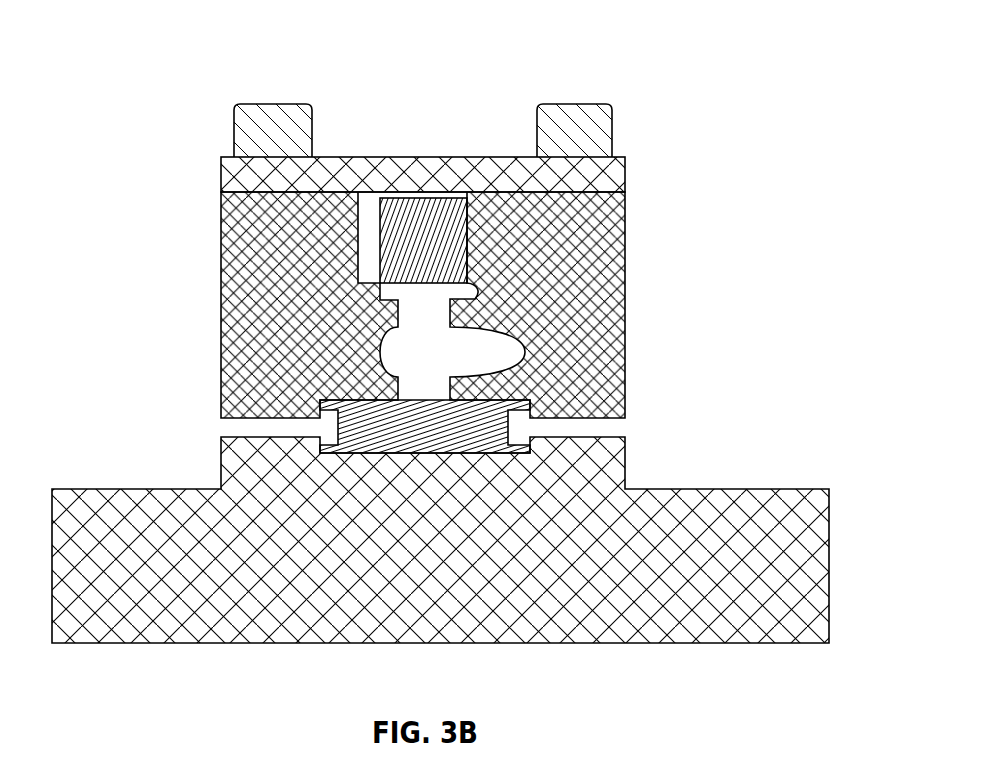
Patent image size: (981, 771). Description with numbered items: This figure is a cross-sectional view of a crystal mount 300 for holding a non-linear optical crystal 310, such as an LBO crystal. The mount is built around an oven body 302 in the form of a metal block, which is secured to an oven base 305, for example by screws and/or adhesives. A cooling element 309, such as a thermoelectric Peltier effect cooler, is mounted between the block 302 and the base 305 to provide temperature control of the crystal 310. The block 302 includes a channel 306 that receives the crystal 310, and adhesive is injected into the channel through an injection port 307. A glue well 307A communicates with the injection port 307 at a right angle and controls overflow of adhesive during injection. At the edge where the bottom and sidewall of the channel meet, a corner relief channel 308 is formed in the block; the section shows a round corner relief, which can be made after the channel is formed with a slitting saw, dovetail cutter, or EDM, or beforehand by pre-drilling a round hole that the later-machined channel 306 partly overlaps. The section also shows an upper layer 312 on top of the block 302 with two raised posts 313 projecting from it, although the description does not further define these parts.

The crystal mount 300 is at (182, 61).
The oven body 302 is at (625, 350).
The oven base 305 is at (436, 564).
The channel 306 is at (361, 202).
The injection port 307 is at (442, 356).
The glue well 307A is at (492, 340).
The corner relief channel 308 is at (484, 280).
The cooling element 309 is at (441, 434).
The non-linear optical crystal 310 is at (425, 202).
The top layer 312 is at (593, 171).
The posts 313 is at (602, 113).